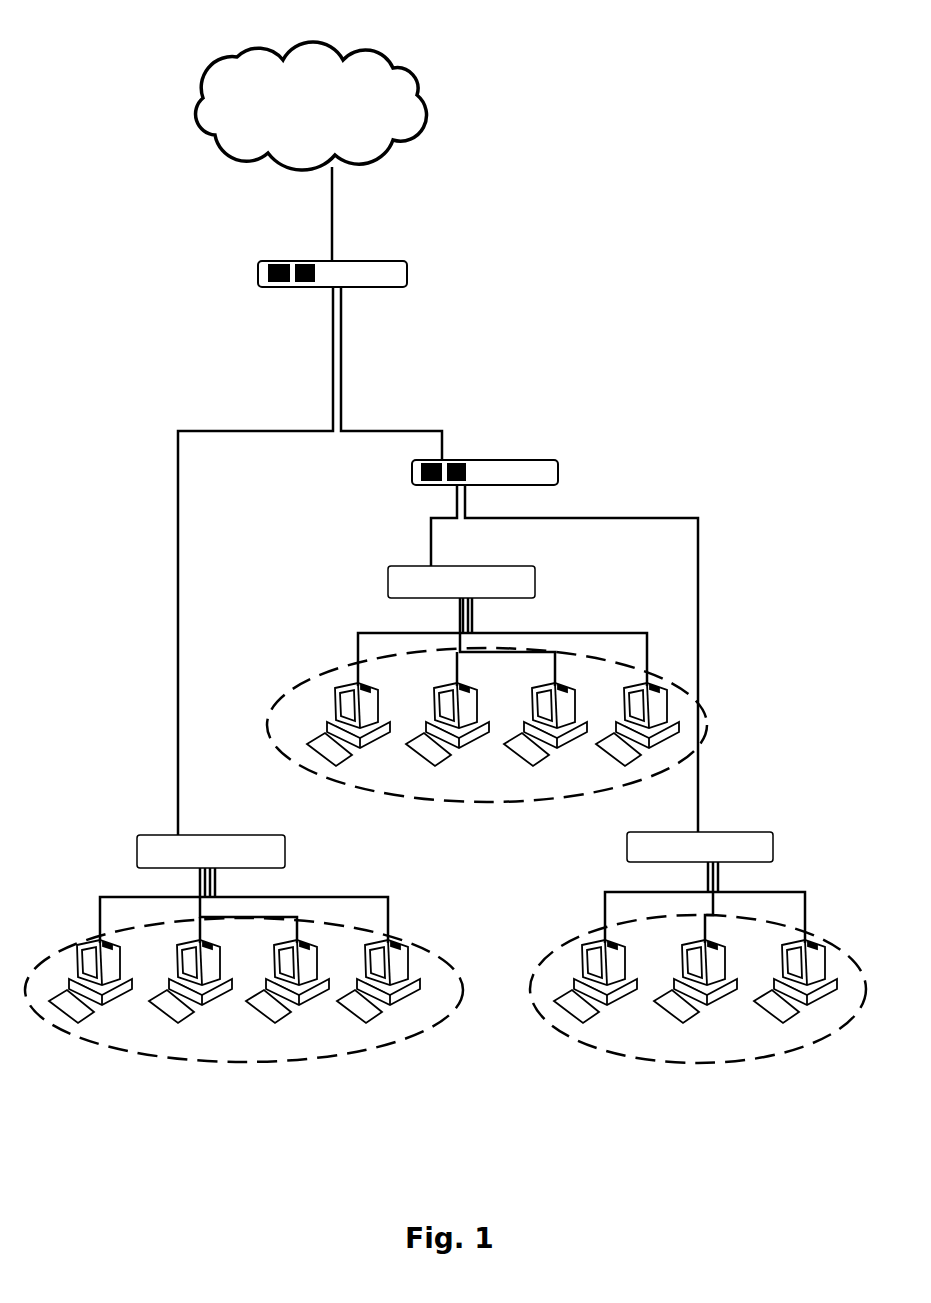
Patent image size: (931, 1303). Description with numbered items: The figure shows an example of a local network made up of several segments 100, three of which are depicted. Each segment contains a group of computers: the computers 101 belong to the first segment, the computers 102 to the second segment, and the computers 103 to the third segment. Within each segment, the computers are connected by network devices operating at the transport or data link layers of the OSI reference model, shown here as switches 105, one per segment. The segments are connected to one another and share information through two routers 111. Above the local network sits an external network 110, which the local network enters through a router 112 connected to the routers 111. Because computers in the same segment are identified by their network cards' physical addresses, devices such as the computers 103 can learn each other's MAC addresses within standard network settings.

The external network 110 is at (237, 56).
The router 112 is at (337, 262).
The routers 111 is at (523, 458).
The switches 105 is at (532, 567).
The segments 100 is at (707, 710).
The computers 103 is at (627, 768).
The computers 101 is at (368, 1025).
The computers 102 is at (588, 1028).